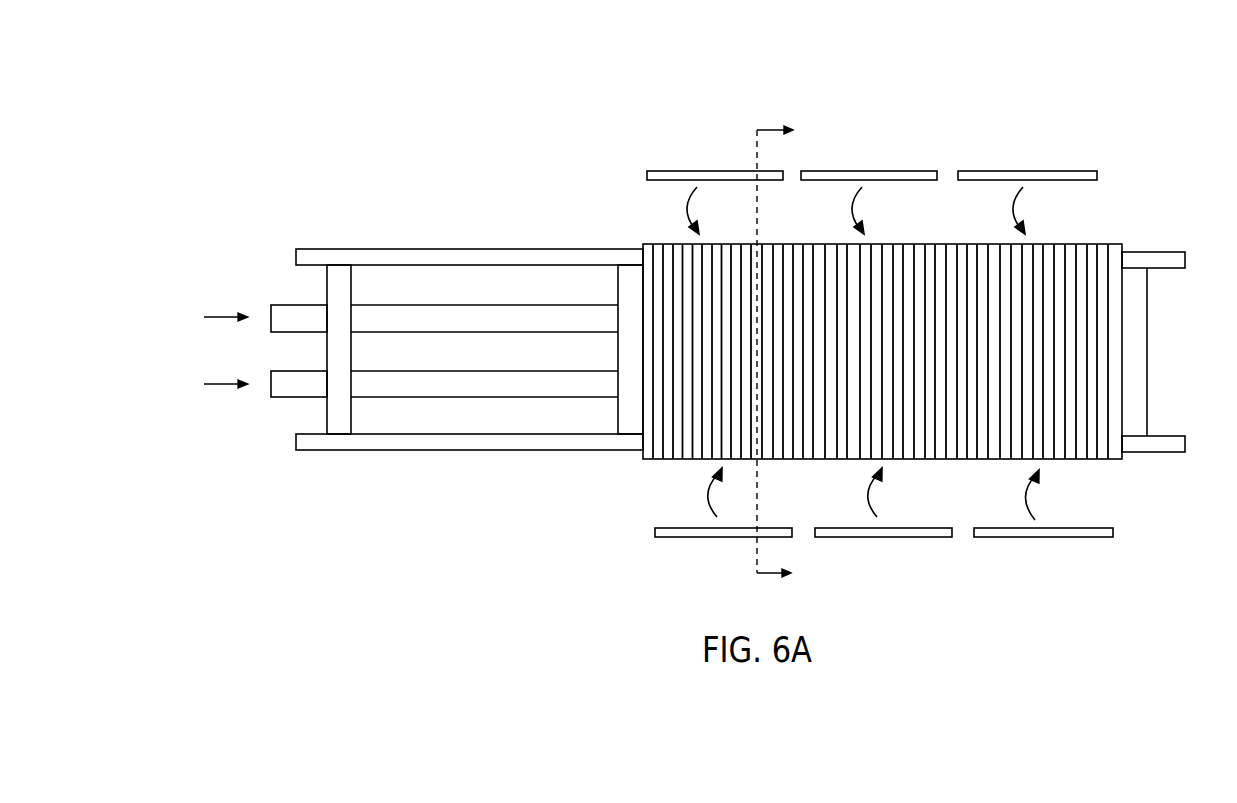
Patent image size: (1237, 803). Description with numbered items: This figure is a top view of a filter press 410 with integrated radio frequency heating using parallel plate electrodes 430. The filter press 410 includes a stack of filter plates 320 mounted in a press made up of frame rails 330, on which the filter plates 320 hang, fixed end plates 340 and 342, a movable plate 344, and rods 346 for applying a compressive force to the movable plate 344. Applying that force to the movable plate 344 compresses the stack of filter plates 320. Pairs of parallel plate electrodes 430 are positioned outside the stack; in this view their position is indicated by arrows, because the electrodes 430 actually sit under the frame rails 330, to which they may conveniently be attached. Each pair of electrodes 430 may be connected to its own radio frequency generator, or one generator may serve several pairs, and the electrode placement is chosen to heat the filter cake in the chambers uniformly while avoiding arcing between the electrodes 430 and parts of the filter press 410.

The filter press 410 is at (584, 114).
The stack of filter plates 320 is at (662, 438).
The frame rails 330 is at (487, 249).
The fixed end plate 340 is at (334, 286).
The fixed end plate 342 is at (1133, 383).
The movable plate 344 is at (627, 295).
The rods 346 is at (303, 383).
The parallel plate electrodes 430 is at (858, 173).